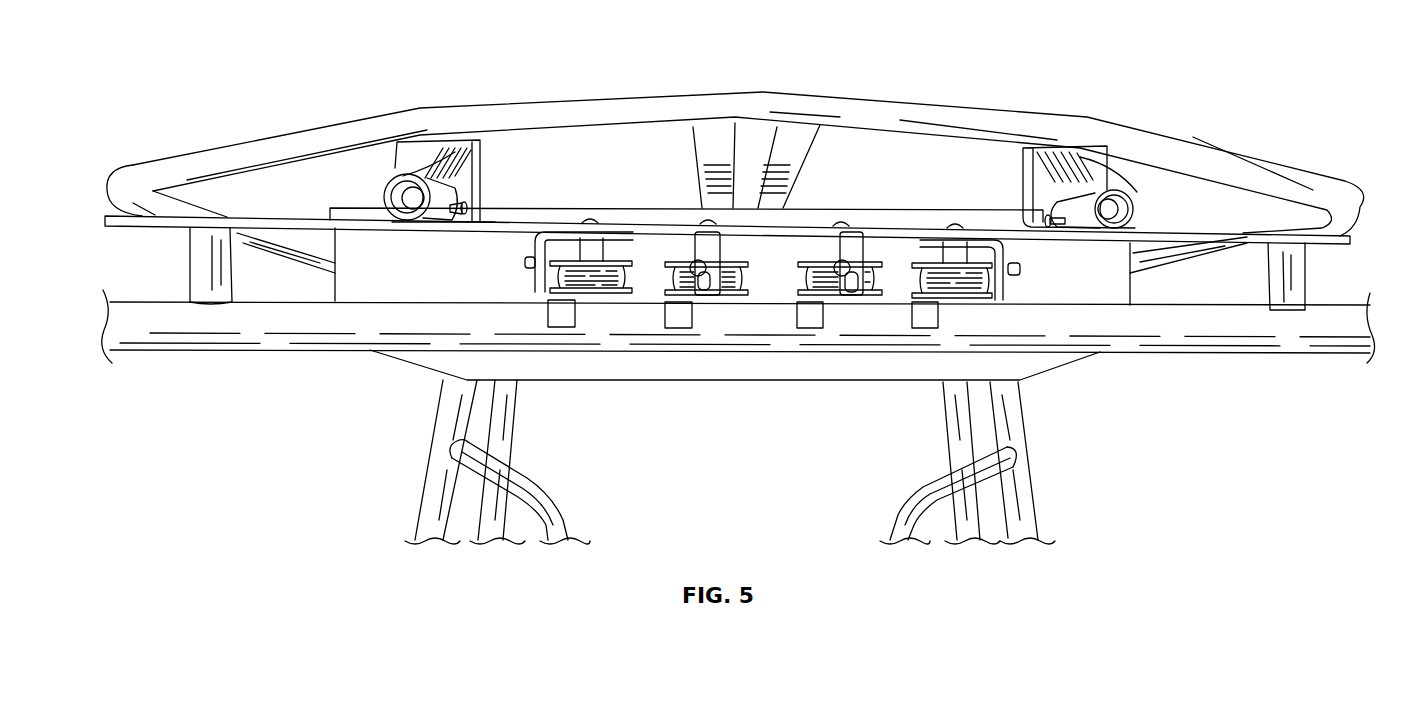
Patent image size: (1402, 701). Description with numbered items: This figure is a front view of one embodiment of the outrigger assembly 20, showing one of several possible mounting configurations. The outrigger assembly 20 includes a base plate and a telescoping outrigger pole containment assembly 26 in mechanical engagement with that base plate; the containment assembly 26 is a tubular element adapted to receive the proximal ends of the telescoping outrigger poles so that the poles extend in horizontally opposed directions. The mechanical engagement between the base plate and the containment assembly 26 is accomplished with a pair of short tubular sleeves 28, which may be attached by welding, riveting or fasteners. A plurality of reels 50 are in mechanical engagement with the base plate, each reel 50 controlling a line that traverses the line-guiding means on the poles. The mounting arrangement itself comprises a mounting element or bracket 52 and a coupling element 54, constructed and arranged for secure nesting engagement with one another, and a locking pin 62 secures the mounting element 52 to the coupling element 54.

The outrigger assembly 20 is at (1180, 373).
The telescoping outrigger pole containment assembly 26 is at (1290, 327).
The short tubular sleeve 28 is at (200, 281).
The reel 50 is at (957, 300).
The mounting element or bracket 52 is at (413, 156).
The coupling element 54 is at (388, 187).
The locking pin 62 is at (463, 213).